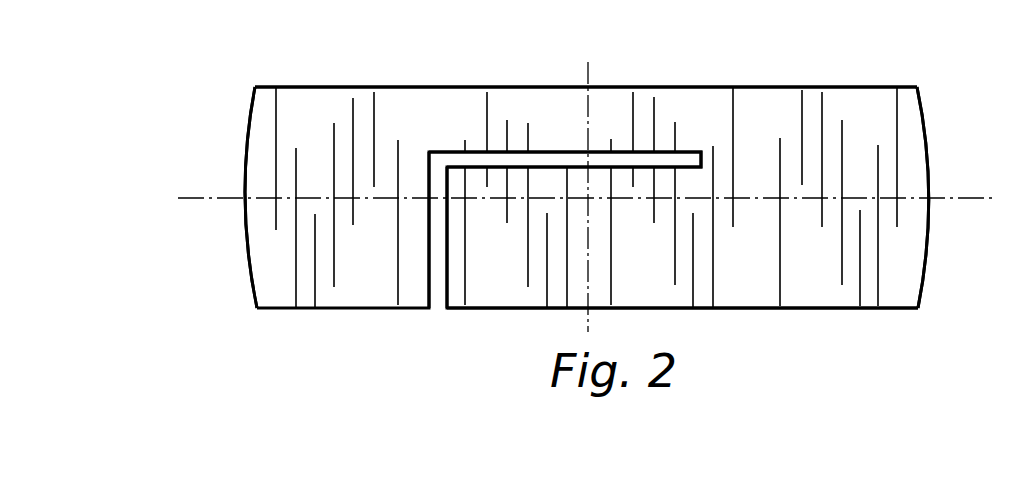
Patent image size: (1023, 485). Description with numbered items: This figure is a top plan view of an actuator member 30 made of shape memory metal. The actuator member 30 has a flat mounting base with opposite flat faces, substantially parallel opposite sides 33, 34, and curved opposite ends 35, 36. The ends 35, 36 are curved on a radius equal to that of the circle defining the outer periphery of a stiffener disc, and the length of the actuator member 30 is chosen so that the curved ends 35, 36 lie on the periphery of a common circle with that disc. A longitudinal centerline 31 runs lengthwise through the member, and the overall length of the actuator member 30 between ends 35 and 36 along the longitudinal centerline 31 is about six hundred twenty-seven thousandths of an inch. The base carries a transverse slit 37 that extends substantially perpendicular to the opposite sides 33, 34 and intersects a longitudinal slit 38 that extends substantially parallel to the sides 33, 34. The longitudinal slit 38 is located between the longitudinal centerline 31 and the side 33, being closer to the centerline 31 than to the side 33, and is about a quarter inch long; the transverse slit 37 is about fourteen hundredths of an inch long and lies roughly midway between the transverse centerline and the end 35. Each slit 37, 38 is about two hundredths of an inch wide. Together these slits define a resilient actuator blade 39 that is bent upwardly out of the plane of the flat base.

The actuator member 30 is at (818, 78).
The longitudinal centerline 31 is at (210, 199).
The side 33 is at (687, 86).
The side 34 is at (762, 308).
The end 35 is at (241, 160).
The end 36 is at (938, 163).
The transverse slit 37 is at (431, 272).
The longitudinal slit 38 is at (508, 150).
The resilient actuator blade 39 is at (518, 253).